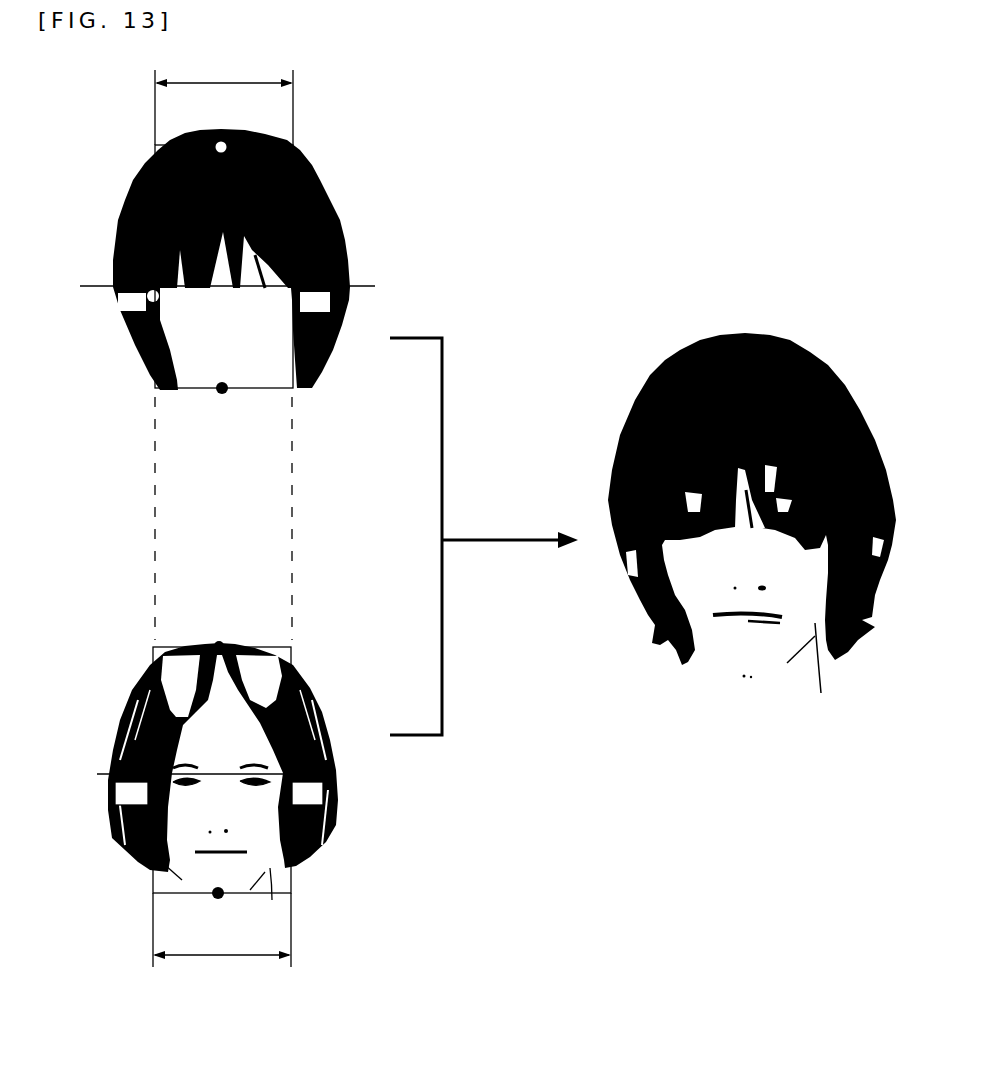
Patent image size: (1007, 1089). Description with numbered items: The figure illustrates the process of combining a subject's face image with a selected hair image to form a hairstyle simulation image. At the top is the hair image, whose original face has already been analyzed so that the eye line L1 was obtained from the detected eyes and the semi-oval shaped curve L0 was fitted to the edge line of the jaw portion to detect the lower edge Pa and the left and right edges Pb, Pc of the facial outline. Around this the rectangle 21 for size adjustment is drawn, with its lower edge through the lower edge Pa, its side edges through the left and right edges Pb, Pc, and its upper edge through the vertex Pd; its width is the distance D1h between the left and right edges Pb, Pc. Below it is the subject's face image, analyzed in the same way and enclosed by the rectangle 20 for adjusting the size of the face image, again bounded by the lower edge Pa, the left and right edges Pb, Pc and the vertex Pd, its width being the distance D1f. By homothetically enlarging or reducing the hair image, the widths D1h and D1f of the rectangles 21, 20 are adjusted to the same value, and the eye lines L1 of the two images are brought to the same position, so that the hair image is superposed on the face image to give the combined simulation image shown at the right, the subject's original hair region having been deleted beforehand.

The rectangle for size adjustment 21 is at (300, 150).
The rectangle for adjusting the size of the face image 20 is at (292, 653).
The lower edge of the facial outline Pa is at (224, 651).
The left edge of the facial outline Pb is at (131, 549).
The right edge of the facial outline Pc is at (311, 548).
The vertex Pd is at (223, 386).
The semi-oval shaped curve L0 is at (177, 314).
The eye line L1 is at (214, 528).
The width between the left and right edges of the facial outline of the hair image D1h is at (224, 103).
The width between the left and right edges of the facial outline of the face image D1f is at (222, 935).